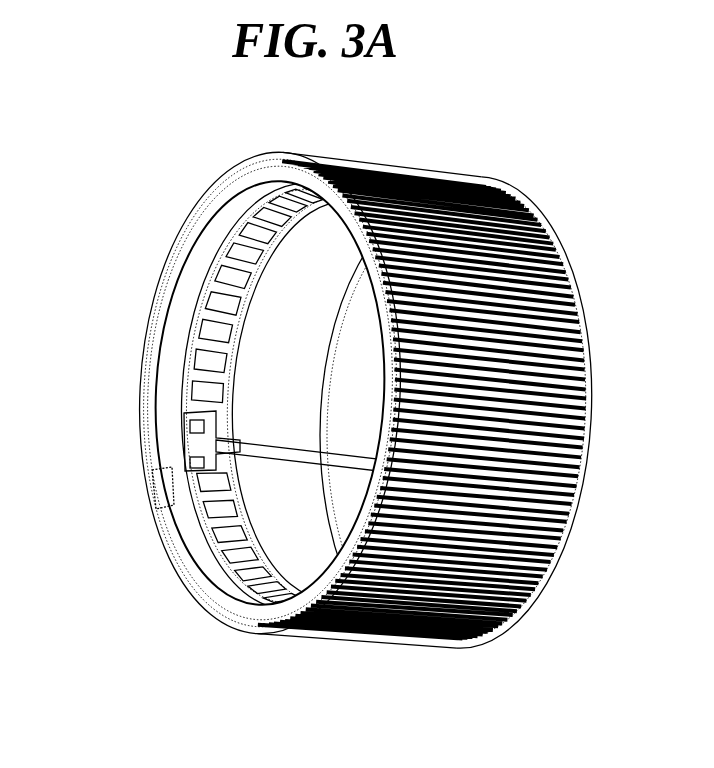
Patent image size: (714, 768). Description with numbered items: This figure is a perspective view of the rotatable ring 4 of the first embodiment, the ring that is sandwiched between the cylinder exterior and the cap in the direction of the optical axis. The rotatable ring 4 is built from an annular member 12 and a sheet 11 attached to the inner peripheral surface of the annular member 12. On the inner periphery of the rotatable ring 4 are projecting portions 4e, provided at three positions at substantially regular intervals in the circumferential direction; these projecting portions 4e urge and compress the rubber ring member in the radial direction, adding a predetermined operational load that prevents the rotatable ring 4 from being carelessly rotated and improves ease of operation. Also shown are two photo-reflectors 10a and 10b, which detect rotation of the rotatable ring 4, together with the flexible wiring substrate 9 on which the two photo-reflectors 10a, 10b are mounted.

The rotatable ring 4 is at (401, 122).
The projecting portions 4e is at (168, 503).
The flexible wiring substrate 9 is at (260, 450).
The photo-reflector 10a is at (200, 465).
The photo-reflector 10b is at (200, 427).
The sheet 11 is at (203, 547).
The annular member 12 is at (180, 573).